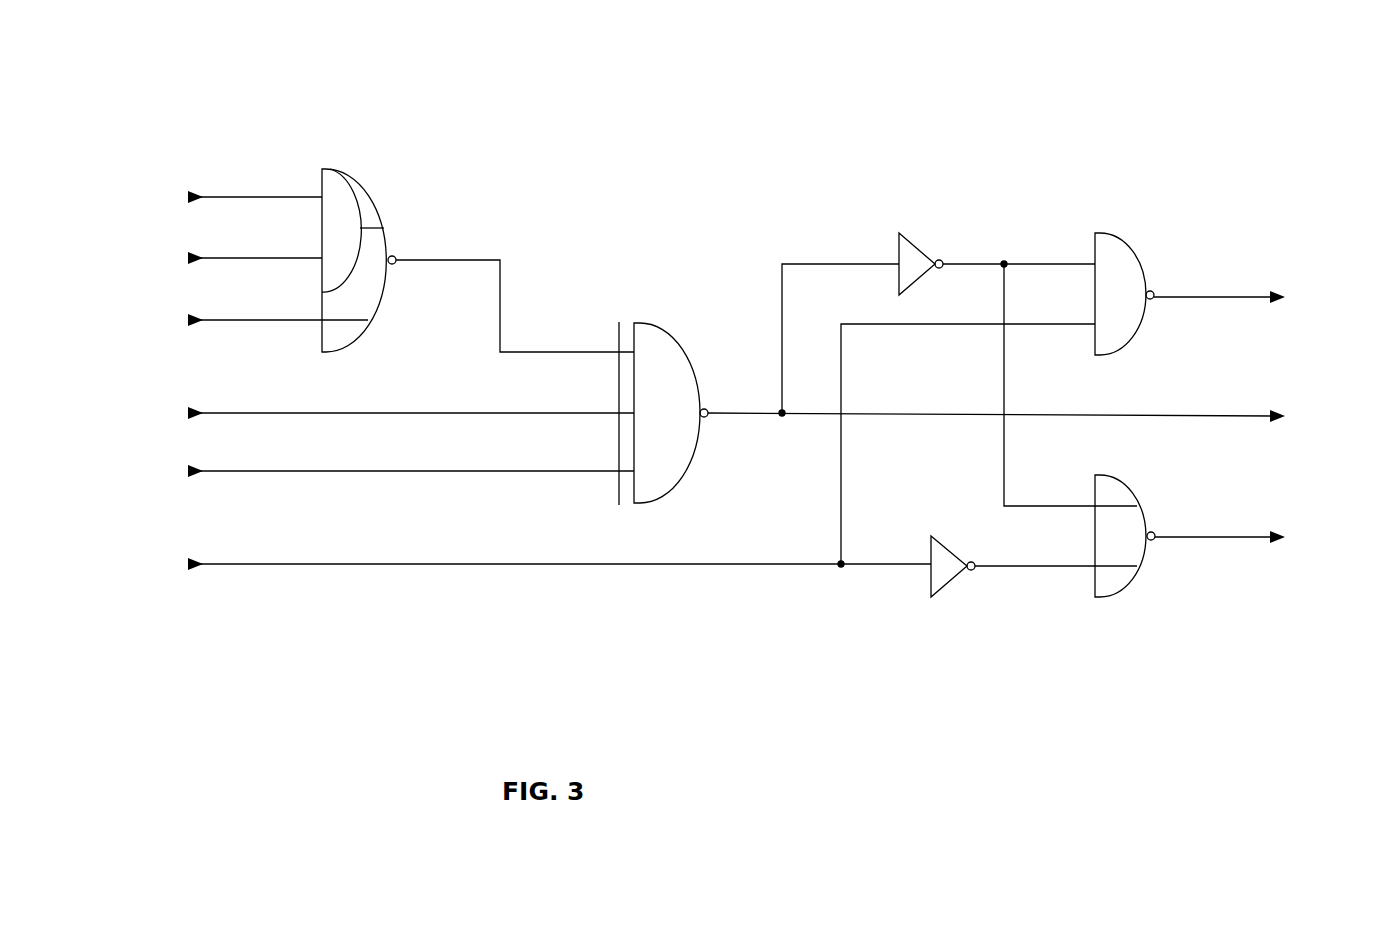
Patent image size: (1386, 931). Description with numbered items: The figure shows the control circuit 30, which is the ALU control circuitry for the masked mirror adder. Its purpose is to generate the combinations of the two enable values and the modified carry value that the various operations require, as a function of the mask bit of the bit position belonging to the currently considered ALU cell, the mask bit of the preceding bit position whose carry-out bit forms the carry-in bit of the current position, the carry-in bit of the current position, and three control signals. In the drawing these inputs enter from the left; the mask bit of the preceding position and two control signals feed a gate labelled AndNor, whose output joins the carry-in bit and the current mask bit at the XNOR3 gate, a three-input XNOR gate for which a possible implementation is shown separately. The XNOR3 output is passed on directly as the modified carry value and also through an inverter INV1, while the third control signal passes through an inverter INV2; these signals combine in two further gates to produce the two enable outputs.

The control circuit 30 is at (657, 112).
The AndNor gate AndNor is at (354, 247).
The XNOR3 gate XNOR3 is at (663, 394).
The first inverter INV1 is at (900, 251).
The second inverter INV2 is at (946, 553).